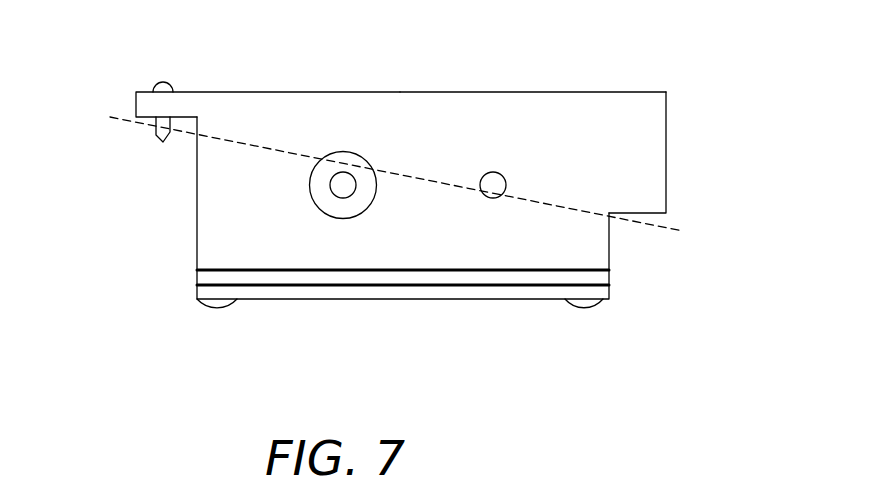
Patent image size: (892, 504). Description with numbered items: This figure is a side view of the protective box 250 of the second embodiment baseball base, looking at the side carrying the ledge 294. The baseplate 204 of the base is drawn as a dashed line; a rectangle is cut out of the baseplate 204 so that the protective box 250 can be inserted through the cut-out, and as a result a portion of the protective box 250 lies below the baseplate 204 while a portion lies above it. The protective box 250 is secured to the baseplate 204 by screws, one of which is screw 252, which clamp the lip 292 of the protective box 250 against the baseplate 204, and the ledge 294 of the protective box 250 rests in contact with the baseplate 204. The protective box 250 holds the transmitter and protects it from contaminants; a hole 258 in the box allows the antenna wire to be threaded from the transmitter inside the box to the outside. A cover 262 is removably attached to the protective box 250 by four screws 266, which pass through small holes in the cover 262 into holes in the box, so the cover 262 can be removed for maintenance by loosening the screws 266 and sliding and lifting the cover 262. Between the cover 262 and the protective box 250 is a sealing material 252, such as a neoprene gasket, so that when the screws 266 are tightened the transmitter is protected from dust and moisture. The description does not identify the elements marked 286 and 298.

The baseplate 204 is at (652, 227).
The protective box 250 is at (346, 175).
The screw 252 is at (157, 83).
The hole 258 is at (498, 173).
The cover 262 is at (501, 290).
The screws 266 is at (215, 308).
The boss 286 is at (318, 207).
The lip 292 is at (170, 107).
The ledge 294 is at (558, 150).
The step 298 is at (637, 213).